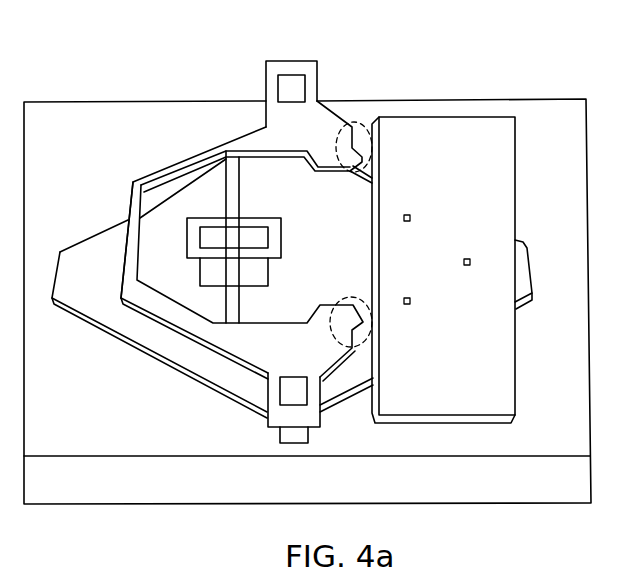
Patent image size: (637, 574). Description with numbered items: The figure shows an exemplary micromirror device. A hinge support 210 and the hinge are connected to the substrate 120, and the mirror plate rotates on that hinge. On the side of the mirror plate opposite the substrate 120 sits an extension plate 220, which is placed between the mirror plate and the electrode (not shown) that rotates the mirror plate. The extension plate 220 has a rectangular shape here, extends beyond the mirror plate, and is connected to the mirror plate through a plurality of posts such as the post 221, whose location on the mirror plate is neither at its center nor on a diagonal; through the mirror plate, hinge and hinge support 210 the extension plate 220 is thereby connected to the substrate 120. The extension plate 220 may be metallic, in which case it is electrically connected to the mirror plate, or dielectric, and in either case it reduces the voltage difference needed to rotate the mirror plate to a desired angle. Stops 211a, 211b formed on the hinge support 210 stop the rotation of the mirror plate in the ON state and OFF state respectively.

The substrate 120 is at (402, 498).
The hinge support 210 is at (285, 50).
The stop 211a is at (363, 120).
The stop 211b is at (123, 242).
The extension plate 220 is at (440, 123).
The post 221 is at (469, 260).